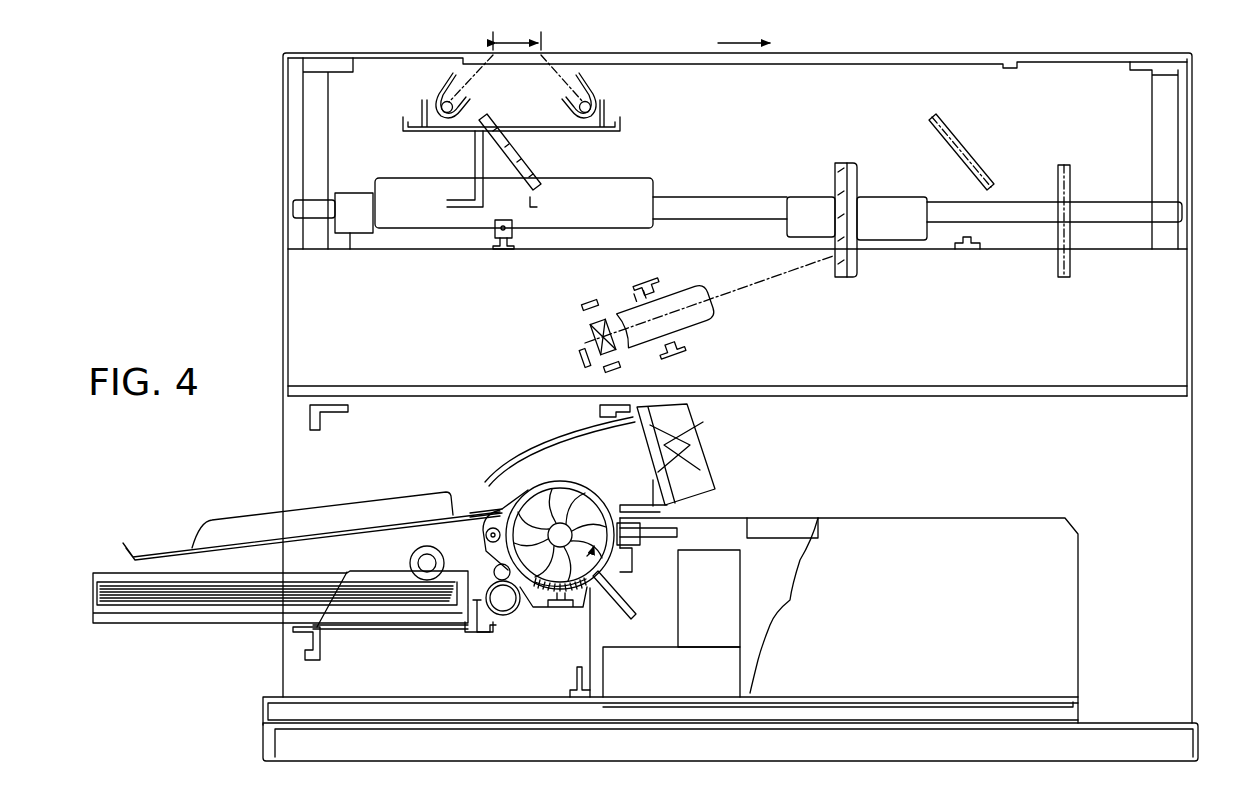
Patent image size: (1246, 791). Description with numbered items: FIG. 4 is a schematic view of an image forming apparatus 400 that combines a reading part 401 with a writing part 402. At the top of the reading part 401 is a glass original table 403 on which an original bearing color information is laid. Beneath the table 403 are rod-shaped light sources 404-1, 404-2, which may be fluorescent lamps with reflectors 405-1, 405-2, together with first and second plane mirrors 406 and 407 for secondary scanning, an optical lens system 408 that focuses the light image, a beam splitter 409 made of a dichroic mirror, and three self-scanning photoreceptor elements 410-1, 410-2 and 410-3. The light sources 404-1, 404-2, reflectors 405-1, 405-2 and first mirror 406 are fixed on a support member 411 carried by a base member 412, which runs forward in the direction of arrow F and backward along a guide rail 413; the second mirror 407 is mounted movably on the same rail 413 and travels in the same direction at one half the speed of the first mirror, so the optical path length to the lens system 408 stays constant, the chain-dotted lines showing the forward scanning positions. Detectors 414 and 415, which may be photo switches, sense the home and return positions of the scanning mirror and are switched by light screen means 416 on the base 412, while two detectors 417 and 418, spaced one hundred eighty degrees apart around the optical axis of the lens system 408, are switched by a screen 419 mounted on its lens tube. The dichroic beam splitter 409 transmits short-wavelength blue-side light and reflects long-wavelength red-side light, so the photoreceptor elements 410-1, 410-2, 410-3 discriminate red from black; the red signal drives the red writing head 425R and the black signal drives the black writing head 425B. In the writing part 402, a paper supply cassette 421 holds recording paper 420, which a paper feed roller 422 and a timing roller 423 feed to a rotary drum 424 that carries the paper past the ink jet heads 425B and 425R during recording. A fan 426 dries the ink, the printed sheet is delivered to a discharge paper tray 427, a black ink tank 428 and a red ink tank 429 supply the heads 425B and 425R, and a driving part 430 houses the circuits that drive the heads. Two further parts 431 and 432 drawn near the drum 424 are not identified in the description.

The image forming apparatus 400 is at (271, 155).
The reading part 401 is at (271, 257).
The writing part 402 is at (271, 438).
The original table 403 is at (697, 55).
The rod-shaped light source 404-1 is at (459, 109).
The rod-shaped light source 404-2 is at (596, 103).
The reflector 405-1 is at (441, 95).
The reflector 405-2 is at (591, 84).
The first plane mirror 406 is at (528, 172).
The second plane mirror 407 is at (836, 171).
The optical lens system 408 is at (713, 310).
The beam splitter 409 is at (592, 333).
The photoreceptor element 410-1 is at (586, 300).
The photoreceptor element 410-2 is at (581, 360).
The photoreceptor element 410-3 is at (622, 368).
The support member 411 is at (474, 147).
The base member 412 is at (650, 173).
The guide rail 413 is at (732, 186).
The detector 414 is at (500, 250).
The detector 415 is at (973, 249).
The light screen means 416 is at (515, 225).
The detector 417 is at (646, 281).
The detector 418 is at (688, 348).
The screen 419 is at (639, 293).
The recording paper 420 is at (193, 600).
The paper supply cassette 421 is at (222, 626).
The paper feed roller 422 is at (410, 556).
The timing roller 423 is at (517, 615).
The rotary drum 424 is at (577, 490).
The ink jet head 425R is at (657, 538).
The ink jet head 425B is at (624, 612).
The fan 426 is at (706, 477).
The discharge paper tray 427 is at (189, 547).
The black ink tank 428 is at (730, 665).
The red ink tank 429 is at (737, 578).
The driving part 430 is at (805, 518).
The pinch roller 431 is at (495, 565).
The paper guide 432 is at (492, 493).